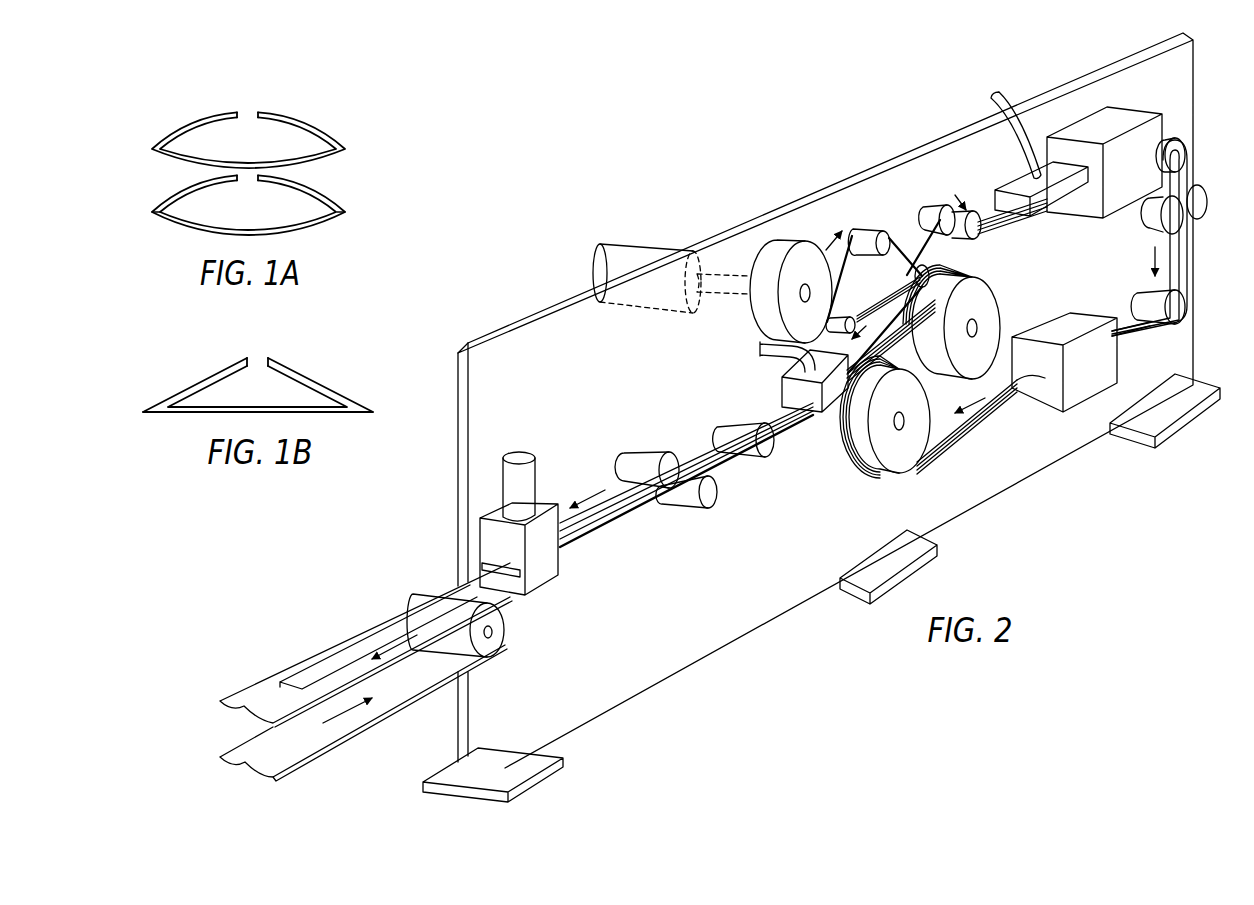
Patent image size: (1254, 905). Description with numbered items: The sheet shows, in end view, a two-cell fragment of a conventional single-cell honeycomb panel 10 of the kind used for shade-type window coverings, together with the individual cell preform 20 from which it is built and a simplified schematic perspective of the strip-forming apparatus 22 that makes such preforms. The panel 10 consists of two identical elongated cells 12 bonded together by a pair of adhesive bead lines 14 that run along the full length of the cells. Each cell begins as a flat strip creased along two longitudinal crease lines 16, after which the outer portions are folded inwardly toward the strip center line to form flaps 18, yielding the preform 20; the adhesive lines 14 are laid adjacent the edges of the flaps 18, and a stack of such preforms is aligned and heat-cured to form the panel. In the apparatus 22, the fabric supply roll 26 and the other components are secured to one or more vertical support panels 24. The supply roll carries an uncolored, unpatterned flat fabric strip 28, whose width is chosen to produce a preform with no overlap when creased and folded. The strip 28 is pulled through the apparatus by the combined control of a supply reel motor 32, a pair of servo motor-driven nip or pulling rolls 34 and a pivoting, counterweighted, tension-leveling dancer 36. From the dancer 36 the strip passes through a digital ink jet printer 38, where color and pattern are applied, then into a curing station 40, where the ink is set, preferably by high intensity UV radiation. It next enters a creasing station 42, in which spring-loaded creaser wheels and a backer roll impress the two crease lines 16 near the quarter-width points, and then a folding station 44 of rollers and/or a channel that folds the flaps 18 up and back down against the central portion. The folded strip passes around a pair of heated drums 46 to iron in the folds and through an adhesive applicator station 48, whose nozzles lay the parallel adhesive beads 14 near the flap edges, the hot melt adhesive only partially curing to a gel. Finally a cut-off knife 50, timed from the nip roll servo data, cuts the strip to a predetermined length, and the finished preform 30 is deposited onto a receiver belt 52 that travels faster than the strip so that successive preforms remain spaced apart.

In FIG. 1A, the single-cell honeycomb panel 10 is at (357, 188).
In FIG. 1A, the cells 12 is at (313, 118).
In FIG. 1A, the adhesive bead lines 14 is at (260, 111).
In FIG. 1B, the adhesive bead lines 14 is at (275, 356).
In FIG. 1A, the crease lines 16 is at (152, 212).
In FIG. 1B, the crease lines 16 is at (143, 412).
In FIG. 2, the crease lines 16 is at (1133, 324).
In FIG. 1B, the flaps 18 is at (190, 382).
In FIG. 1B, the preform 20 is at (329, 344).
In FIG. 2, the strip-forming apparatus 22 is at (450, 486).
In FIG. 2, the vertical support panels 24 is at (517, 362).
In FIG. 2, the fabric supply roll 26 is at (822, 251).
In FIG. 2, the fabric strip 28 is at (856, 212).
In FIG. 2, the preform (cut-to-length) 30 is at (336, 646).
In FIG. 2, the supply reel motor 32 is at (632, 246).
In FIG. 2, the nip or pulling rolls 34 is at (674, 514).
In FIG. 2, the dancer 36 is at (915, 260).
In FIG. 2, the digital ink jet printer 38 is at (1022, 184).
In FIG. 2, the curing station 40 is at (1152, 128).
In FIG. 2, the creasing station 42 is at (1184, 212).
In FIG. 2, the folding station 44 is at (1085, 389).
In FIG. 2, the heated drums 46 is at (989, 317).
In FIG. 2, the adhesive applicator station 48 is at (790, 392).
In FIG. 2, the cut-off knife 50 is at (548, 566).
In FIG. 2, the receiver belt 52 is at (259, 756).